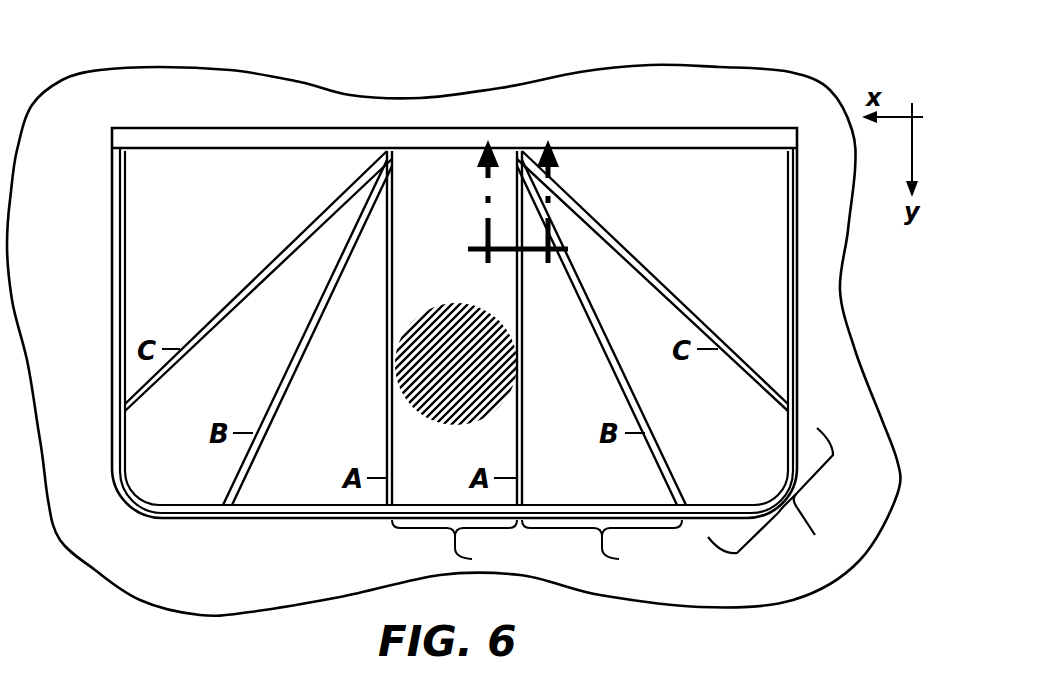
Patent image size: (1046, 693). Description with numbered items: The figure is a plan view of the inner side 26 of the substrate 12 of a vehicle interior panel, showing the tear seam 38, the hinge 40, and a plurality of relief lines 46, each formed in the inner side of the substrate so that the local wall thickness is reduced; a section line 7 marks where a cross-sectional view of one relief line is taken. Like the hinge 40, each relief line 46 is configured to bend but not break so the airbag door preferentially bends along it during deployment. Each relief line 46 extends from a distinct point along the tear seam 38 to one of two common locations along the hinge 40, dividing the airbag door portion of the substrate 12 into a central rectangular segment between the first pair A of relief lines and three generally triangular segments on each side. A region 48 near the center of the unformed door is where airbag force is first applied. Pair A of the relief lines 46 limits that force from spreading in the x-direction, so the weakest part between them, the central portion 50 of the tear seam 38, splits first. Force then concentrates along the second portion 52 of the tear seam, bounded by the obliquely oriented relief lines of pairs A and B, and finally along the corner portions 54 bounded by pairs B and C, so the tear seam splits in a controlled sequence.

The substrate 12 is at (98, 102).
The inner side 26 is at (711, 115).
The tear seam 38 is at (147, 515).
The hinge 40 is at (212, 138).
The relief lines 46 is at (665, 283).
The region of initial application of airbag force 48 is at (425, 309).
The central portion of the tear seam 50 is at (454, 547).
The second portion of the tear seam 52 is at (602, 547).
The corner portions of the tear seam 54 is at (778, 502).
The cross-sectional view line 7 is at (520, 201).